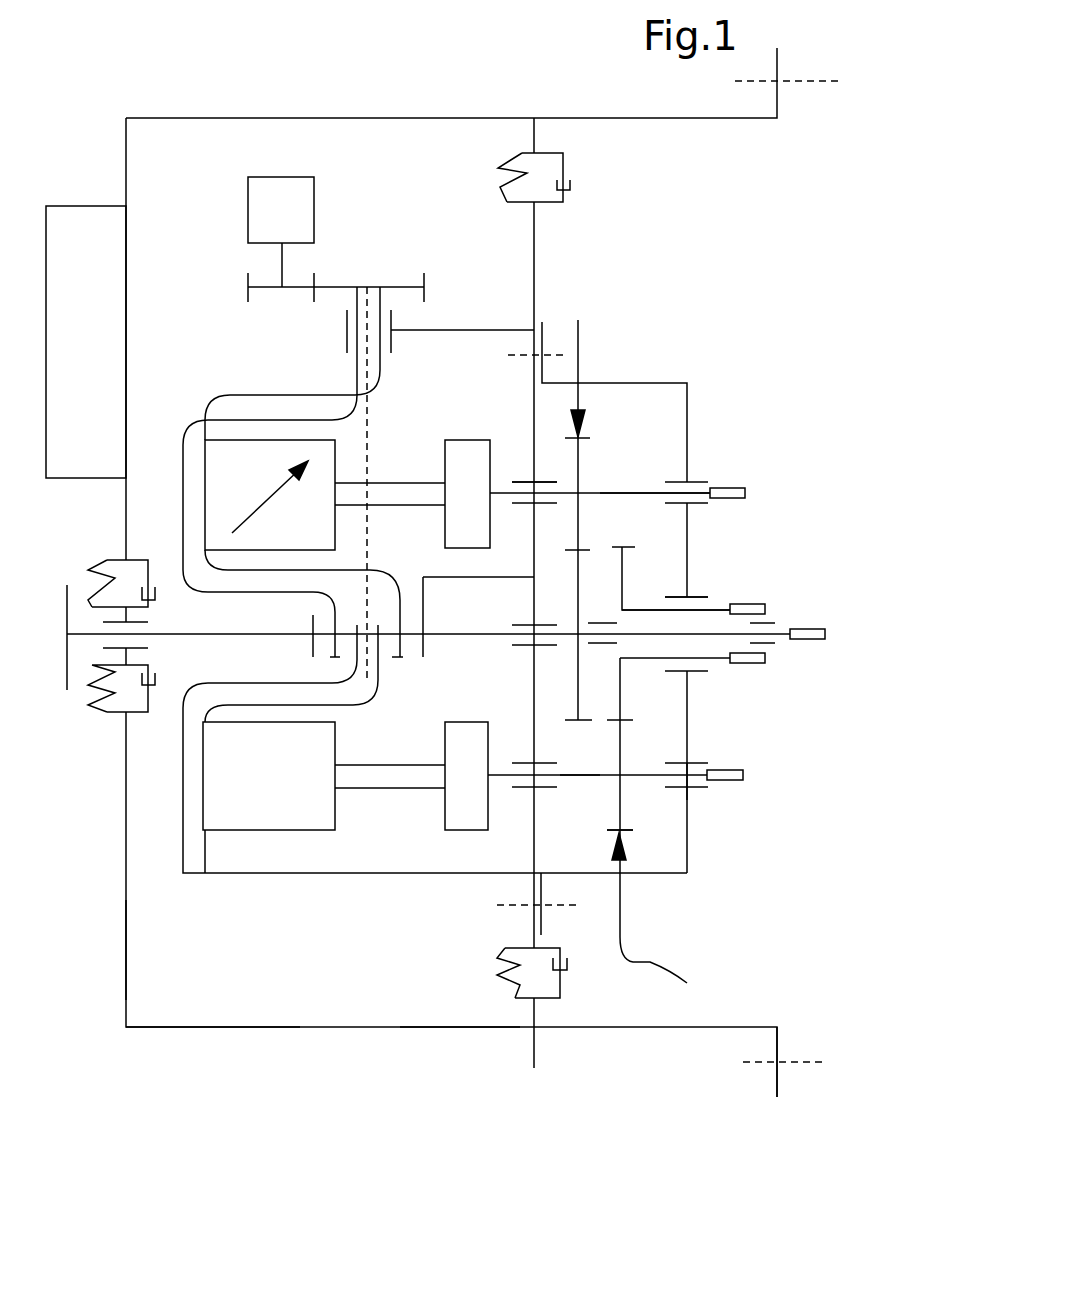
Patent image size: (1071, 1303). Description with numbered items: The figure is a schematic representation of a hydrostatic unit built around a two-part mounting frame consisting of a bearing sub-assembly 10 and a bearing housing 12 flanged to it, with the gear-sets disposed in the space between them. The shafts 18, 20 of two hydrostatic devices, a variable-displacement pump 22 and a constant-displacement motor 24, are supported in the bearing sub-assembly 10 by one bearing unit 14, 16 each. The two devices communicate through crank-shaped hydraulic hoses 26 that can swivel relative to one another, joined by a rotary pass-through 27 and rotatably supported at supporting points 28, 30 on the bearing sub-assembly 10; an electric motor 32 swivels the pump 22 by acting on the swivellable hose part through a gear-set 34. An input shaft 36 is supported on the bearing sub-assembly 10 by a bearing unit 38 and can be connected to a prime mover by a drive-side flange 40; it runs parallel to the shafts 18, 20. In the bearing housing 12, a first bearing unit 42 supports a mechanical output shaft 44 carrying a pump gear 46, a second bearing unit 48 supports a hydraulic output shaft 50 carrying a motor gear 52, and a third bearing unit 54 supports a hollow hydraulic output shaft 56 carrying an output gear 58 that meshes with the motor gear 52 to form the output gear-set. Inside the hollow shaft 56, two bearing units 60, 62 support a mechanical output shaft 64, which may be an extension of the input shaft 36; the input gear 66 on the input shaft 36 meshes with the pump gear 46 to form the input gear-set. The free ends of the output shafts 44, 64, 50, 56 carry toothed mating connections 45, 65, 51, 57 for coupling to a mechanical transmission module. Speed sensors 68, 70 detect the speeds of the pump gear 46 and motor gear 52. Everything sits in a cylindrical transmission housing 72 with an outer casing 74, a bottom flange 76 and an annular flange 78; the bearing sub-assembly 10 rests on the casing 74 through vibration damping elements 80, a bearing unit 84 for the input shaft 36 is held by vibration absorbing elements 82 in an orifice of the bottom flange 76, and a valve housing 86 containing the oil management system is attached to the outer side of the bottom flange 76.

The bearing sub-assembly 10 is at (537, 232).
The bearing housing 12 is at (663, 383).
The bearing unit 14 is at (540, 482).
The bearing unit 16 is at (522, 787).
The variable-displacement pump shaft 18 is at (500, 493).
The constant-displacement motor shaft 20 is at (493, 777).
The variable-displacement pump 22 is at (227, 460).
The constant-displacement motor 24 is at (270, 810).
The hydraulic hoses 26 is at (193, 510).
The rotary pass-through 27 is at (422, 623).
The supporting point 28 is at (358, 647).
The supporting point 30 is at (392, 318).
The electric motor 32 is at (278, 195).
The gear-set 34 is at (395, 287).
The input shaft 36 is at (227, 636).
The bearing unit 38 is at (695, 788).
The flange 40 is at (65, 637).
The first bearing unit 42 is at (700, 480).
The mechanical output shaft 44 is at (622, 493).
The toothed mating connection 45 is at (735, 490).
The pump gear 46 is at (578, 465).
The second bearing unit 48 is at (690, 790).
The hydraulic output shaft 50 is at (577, 777).
The toothed mating connection 51 is at (727, 778).
The motor gear 52 is at (512, 645).
The third bearing unit 54 is at (690, 597).
The hollow output shaft 56 is at (640, 610).
The toothed mating connection 57 is at (748, 607).
The output gear 58 is at (622, 570).
The bearing unit 60 is at (765, 643).
The bearing unit 62 is at (602, 645).
The mechanical output shaft 64 is at (710, 634).
The toothed mating connection 65 is at (808, 638).
The input gear 66 is at (577, 697).
The speed sensor 68 is at (583, 417).
The speed sensor 70 is at (625, 855).
The transmission housing 72 is at (238, 1027).
The cylindrical outer casing 74 is at (462, 1027).
The bottom flange 76 is at (126, 948).
The annular flange 78 is at (770, 1037).
The vibration damping element 80 is at (545, 170).
The vibration absorbing element 82 is at (113, 567).
The bearing unit 84 is at (107, 620).
The valve housing 86 is at (88, 222).